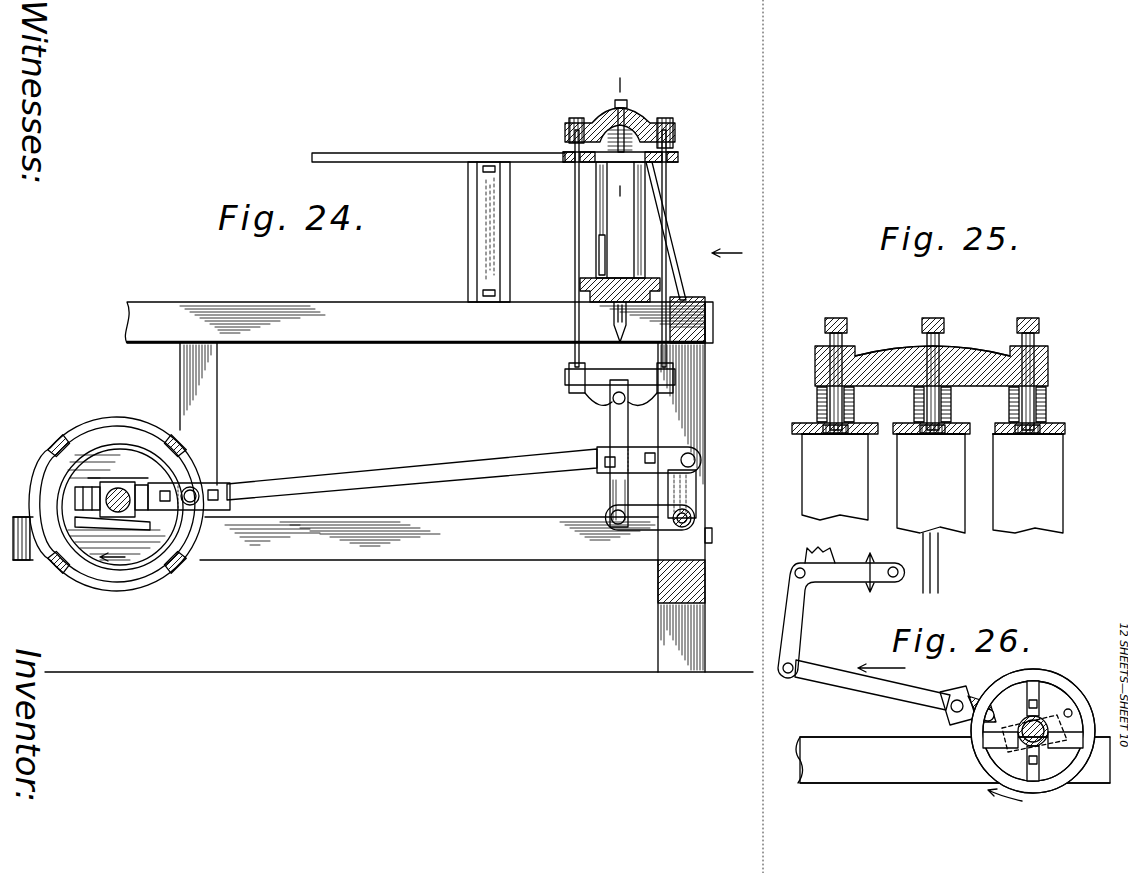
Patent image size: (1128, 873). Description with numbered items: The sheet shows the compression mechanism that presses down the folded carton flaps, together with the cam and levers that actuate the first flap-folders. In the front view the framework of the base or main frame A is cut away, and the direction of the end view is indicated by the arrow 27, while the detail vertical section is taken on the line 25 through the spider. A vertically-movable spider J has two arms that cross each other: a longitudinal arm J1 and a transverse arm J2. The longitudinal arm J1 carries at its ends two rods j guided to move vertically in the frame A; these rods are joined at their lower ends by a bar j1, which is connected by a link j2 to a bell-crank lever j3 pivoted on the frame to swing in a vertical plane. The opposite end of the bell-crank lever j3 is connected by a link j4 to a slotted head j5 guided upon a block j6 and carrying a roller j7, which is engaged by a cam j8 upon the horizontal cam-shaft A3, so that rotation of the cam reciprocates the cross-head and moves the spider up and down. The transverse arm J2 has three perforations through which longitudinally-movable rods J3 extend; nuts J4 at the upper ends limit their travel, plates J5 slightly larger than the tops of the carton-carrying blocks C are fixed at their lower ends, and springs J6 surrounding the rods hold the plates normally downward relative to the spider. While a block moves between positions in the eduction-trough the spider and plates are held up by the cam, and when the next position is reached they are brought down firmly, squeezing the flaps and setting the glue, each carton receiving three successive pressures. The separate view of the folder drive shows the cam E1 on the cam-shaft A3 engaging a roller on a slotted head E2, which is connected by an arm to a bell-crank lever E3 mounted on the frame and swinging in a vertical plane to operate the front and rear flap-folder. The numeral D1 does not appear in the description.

In FIG. 24, the base or main frame A is at (415, 322).
In FIG. 24, the horizontal cam-shaft A3 is at (118, 488).
In FIG. 26, the horizontal cam-shaft A3 is at (1040, 722).
In FIG. 24, the block C is at (620, 220).
In FIG. 24, the cylinder flange D1 is at (662, 290).
In FIG. 24, the spider J is at (650, 120).
In FIG. 25, the spider J is at (1050, 366).
In FIG. 24, the longitudinal arm J1 is at (679, 135).
In FIG. 25, the transverse arm J2 is at (975, 345).
In FIG. 24, the longitudinally-movable rods J3 is at (628, 112).
In FIG. 25, the longitudinally-movable rods J3 is at (828, 340).
In FIG. 25, the nuts J4 is at (848, 326).
In FIG. 25, the plates J5 is at (995, 440).
In FIG. 25, the springs J6 is at (853, 403).
In FIG. 24, the rods j is at (575, 220).
In FIG. 24, the bar j1 is at (602, 390).
In FIG. 24, the link j2 is at (608, 490).
In FIG. 24, the bell-crank lever j3 is at (645, 530).
In FIG. 24, the link j4 is at (410, 472).
In FIG. 24, the slotted head j5 is at (137, 480).
In FIG. 24, the block j6 is at (132, 512).
In FIG. 24, the roller j7 is at (197, 484).
In FIG. 24, the cam j8 is at (112, 592).
In FIG. 24, the section line 25 is at (619, 136).
In FIG. 24, the view arrow 27 is at (728, 243).
In FIG. 26, the cam E1 is at (1080, 710).
In FIG. 26, the slotted head E2 is at (996, 702).
In FIG. 26, the bell-crank lever E3 is at (800, 620).